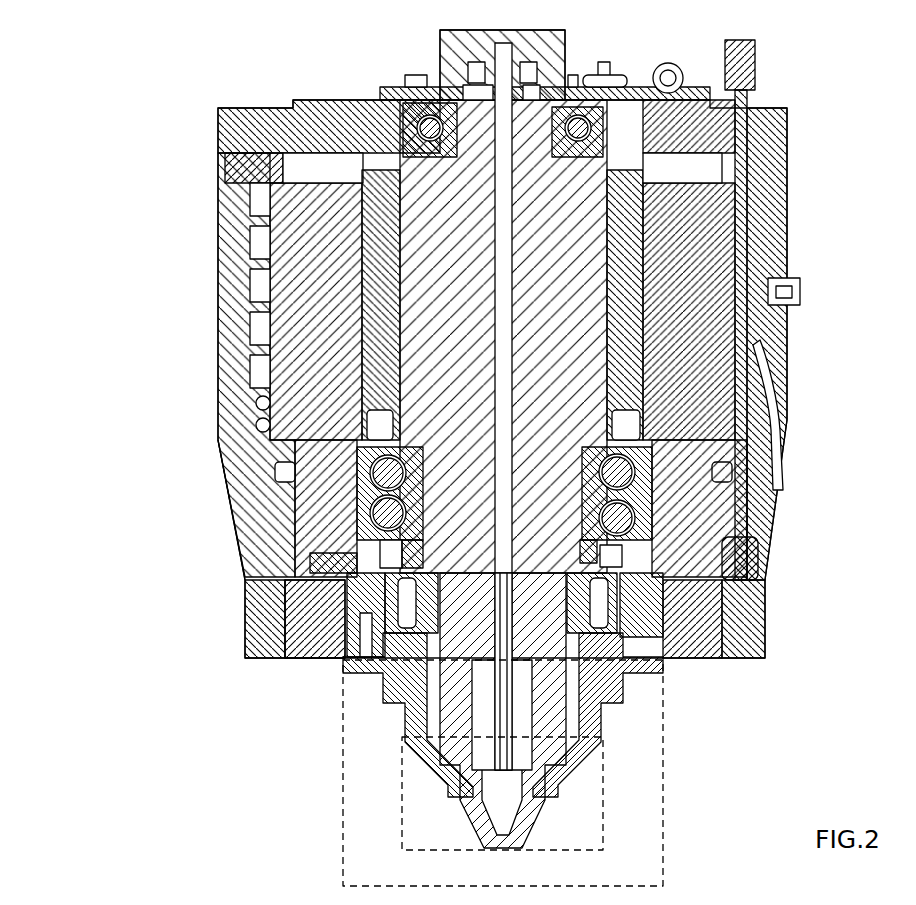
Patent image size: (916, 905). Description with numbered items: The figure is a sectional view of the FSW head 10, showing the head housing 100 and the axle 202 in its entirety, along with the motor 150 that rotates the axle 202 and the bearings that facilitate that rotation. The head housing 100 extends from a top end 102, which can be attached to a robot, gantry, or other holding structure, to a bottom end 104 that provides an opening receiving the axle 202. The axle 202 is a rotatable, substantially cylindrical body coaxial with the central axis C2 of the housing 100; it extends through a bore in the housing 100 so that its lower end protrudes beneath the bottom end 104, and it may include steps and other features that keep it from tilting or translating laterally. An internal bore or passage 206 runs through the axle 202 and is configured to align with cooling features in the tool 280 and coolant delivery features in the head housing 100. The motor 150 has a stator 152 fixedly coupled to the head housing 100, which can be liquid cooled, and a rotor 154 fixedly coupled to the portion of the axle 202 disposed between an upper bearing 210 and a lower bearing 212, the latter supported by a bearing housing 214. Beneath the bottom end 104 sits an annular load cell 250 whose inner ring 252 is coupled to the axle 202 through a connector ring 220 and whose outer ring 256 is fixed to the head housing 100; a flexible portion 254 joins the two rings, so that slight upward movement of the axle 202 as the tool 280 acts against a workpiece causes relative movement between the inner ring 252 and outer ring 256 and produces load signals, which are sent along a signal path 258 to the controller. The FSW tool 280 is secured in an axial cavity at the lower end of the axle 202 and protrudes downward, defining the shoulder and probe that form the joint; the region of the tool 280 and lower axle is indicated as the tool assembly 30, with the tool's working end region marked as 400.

The FSW head 10 is at (140, 335).
The axis C2 is at (128, 400).
The nozzle assembly 30 is at (343, 800).
The head housing 100 is at (228, 212).
The top end 102 is at (242, 122).
The bottom end 104 is at (245, 583).
The motor 150 is at (843, 105).
The stator 152 is at (700, 230).
The rotor 154 is at (643, 182).
The axle 202 is at (567, 292).
The internal bore or passage 206 is at (485, 197).
The upper bearing 210 is at (583, 127).
The lower bearing 212 is at (613, 522).
The bearing housing 214 is at (700, 540).
The connector ring 220 is at (685, 572).
The annular load cell 250 is at (692, 657).
The inner ring 252 is at (353, 655).
The flexible portion 254 is at (315, 655).
The outer ring 256 is at (248, 627).
The signal path 258 is at (752, 62).
The FSW tool 280 is at (520, 705).
The nozzle tip 400 is at (403, 803).